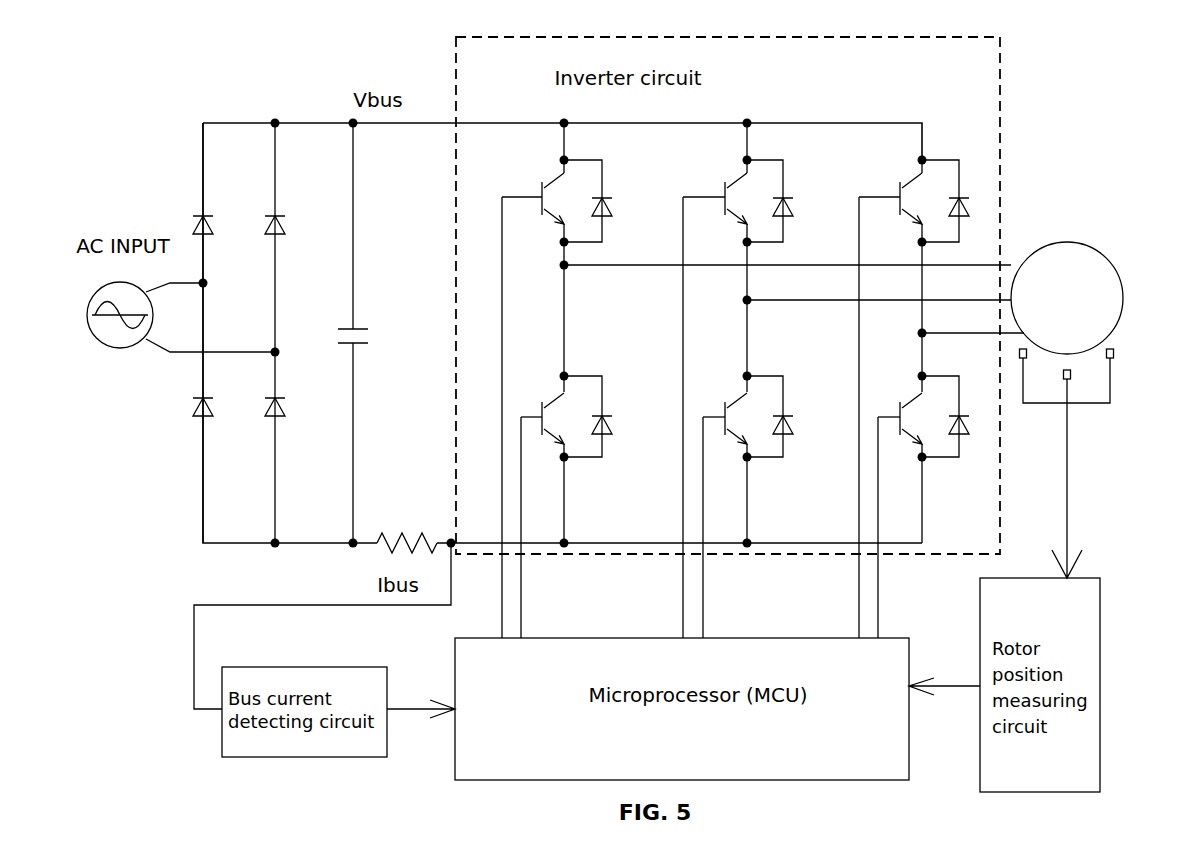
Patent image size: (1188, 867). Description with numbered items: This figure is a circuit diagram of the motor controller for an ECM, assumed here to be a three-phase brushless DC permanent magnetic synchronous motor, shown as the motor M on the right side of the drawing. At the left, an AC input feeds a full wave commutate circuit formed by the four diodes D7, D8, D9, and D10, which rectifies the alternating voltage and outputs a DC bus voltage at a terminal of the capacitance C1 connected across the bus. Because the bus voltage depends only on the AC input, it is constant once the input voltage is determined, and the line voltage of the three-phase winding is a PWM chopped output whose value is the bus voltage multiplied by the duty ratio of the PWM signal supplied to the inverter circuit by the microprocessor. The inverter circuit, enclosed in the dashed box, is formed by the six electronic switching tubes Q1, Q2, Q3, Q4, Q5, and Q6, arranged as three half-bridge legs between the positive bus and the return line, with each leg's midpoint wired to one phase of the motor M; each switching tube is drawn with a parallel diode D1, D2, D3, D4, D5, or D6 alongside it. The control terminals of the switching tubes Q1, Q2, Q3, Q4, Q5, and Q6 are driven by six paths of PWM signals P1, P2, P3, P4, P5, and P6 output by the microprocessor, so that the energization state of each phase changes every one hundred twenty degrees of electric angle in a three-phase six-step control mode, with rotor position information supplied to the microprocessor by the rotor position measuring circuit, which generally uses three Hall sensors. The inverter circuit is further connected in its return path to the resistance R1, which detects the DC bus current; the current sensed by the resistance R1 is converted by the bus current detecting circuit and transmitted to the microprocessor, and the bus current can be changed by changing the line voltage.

The diode D7 is at (222, 333).
The diode D8 is at (295, 333).
The diode D9 is at (221, 407).
The diode D10 is at (300, 407).
The capacitance C1 is at (364, 333).
The resistance R1 is at (407, 523).
The electronic switching tube Q1 is at (533, 185).
The electronic switching tube Q2 is at (715, 192).
The electronic switching tube Q3 is at (890, 187).
The electronic switching tube Q4 is at (540, 403).
The electronic switching tube Q5 is at (725, 402).
The electronic switching tube Q6 is at (900, 406).
The freewheeling diode D1 is at (606, 201).
The freewheeling diode D2 is at (788, 201).
The freewheeling diode D3 is at (958, 201).
The freewheeling diode D4 is at (603, 416).
The freewheeling diode D5 is at (784, 416).
The freewheeling diode D6 is at (958, 416).
The PWM signal P1 is at (484, 417).
The PWM signal P2 is at (537, 527).
The PWM signal P3 is at (668, 417).
The PWM signal P4 is at (719, 527).
The PWM signal P5 is at (837, 417).
The PWM signal P6 is at (905, 527).
The motor M is at (1067, 298).